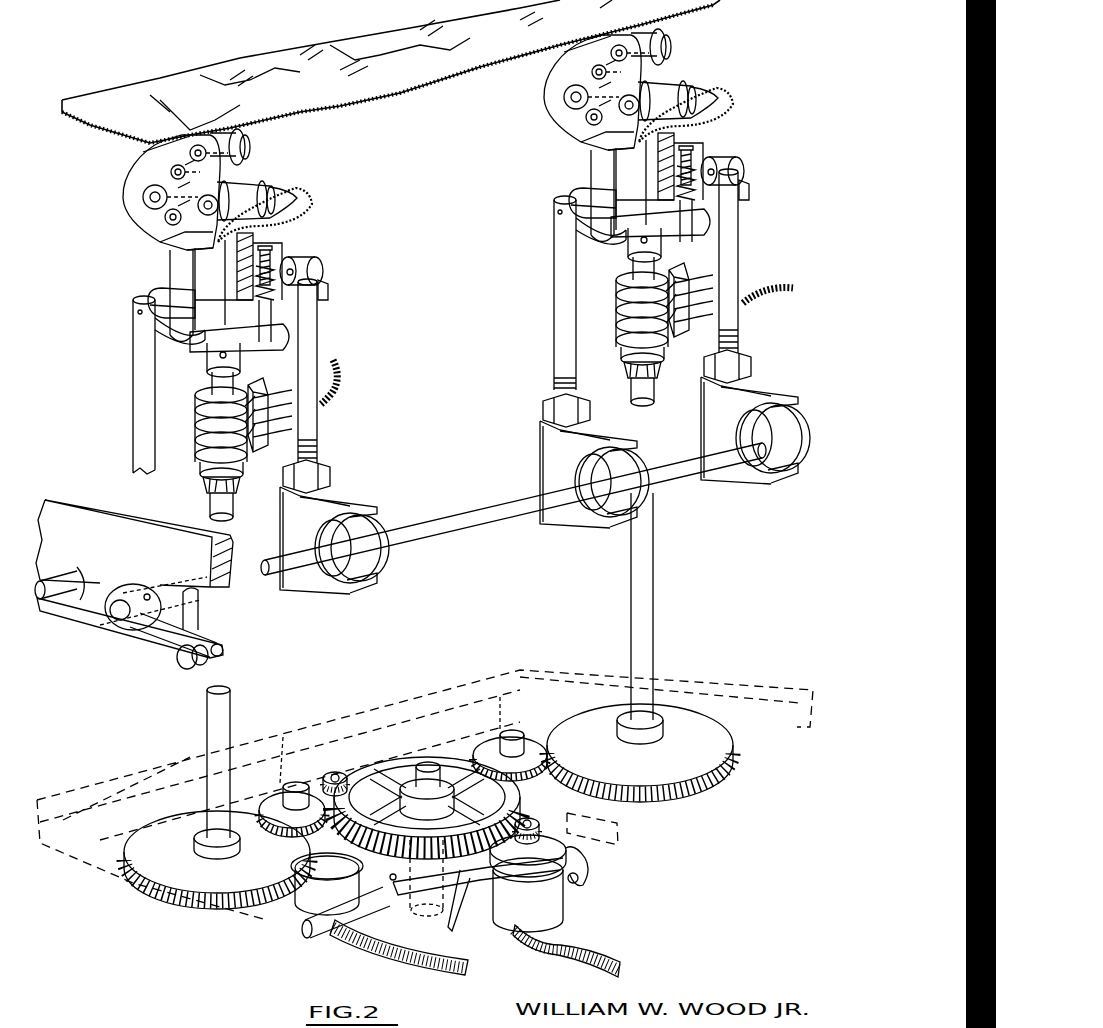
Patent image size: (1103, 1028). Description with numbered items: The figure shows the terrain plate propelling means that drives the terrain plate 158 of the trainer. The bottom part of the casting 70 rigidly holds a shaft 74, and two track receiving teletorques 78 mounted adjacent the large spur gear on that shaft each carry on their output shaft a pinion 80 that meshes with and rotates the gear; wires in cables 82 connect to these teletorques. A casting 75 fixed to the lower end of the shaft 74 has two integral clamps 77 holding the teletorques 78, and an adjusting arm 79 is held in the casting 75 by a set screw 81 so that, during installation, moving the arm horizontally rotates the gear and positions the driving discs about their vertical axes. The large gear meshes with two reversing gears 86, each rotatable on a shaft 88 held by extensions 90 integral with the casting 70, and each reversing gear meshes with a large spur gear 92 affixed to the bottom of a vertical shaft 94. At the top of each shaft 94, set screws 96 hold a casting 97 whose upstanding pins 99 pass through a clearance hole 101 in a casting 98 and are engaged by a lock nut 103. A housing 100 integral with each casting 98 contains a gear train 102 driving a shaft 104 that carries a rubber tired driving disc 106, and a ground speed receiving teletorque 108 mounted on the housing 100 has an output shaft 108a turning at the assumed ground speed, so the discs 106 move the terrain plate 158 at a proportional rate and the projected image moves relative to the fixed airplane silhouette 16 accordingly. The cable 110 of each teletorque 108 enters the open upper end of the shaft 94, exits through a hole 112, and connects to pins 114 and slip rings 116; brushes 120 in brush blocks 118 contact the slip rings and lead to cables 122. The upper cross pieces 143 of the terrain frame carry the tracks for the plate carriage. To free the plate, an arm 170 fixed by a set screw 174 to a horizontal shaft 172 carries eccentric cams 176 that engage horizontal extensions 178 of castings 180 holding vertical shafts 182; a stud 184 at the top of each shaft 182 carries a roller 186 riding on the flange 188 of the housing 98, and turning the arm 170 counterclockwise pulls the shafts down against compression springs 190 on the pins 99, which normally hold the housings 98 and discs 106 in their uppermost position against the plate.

The airplane silhouette 16 is at (522, 797).
The casting 70 is at (330, 740).
The shaft 74 is at (430, 766).
The casting 75 is at (449, 915).
The clamps 77 is at (320, 862).
The receiver teletorques 78 is at (310, 868).
The adjusting arm 79 is at (326, 935).
The pinion 80 is at (340, 771).
The set screw 81 is at (392, 882).
The cables 82 is at (445, 970).
The reversing gears 86 is at (283, 800).
The shafts 88 is at (295, 812).
The extensions 90 is at (285, 736).
The large spur gears 92 is at (165, 900).
The vertical shafts 94 is at (225, 704).
The set screws 96 is at (226, 355).
The casting 97 is at (205, 338).
The casting 98 is at (170, 272).
The upstanding pins 99 is at (268, 255).
The housing 100 is at (130, 163).
The clearance hole 101 is at (322, 268).
The gear train 102 is at (122, 206).
The lock nut 103 is at (275, 262).
The shaft 104 is at (246, 152).
The rubber tired driving disc 106 is at (247, 141).
The receiver teletorque 108 is at (285, 190).
The output shafts 108a is at (382, 201).
The cable 110 is at (313, 204).
The holes 112 is at (236, 505).
The pins 114 is at (197, 489).
The slip rings 116 is at (200, 435).
The brush blocks 118 is at (258, 390).
The brushes 120 is at (250, 465).
The cables 122 is at (336, 381).
The upper cross pieces 143 is at (90, 500).
The terrain plate 158 is at (333, 47).
The arm 170 is at (163, 633).
The horizontal shaft 172 is at (430, 540).
The set screw 174 is at (148, 594).
The eccentric cams 176 is at (372, 527).
The horizontal extensions 178 is at (340, 500).
The castings 180 is at (540, 452).
The vertical shafts 182 is at (137, 403).
The horizontal stud 184 is at (135, 310).
The roller 186 is at (150, 300).
The flange 188 is at (170, 333).
The compression spring 190 is at (277, 291).